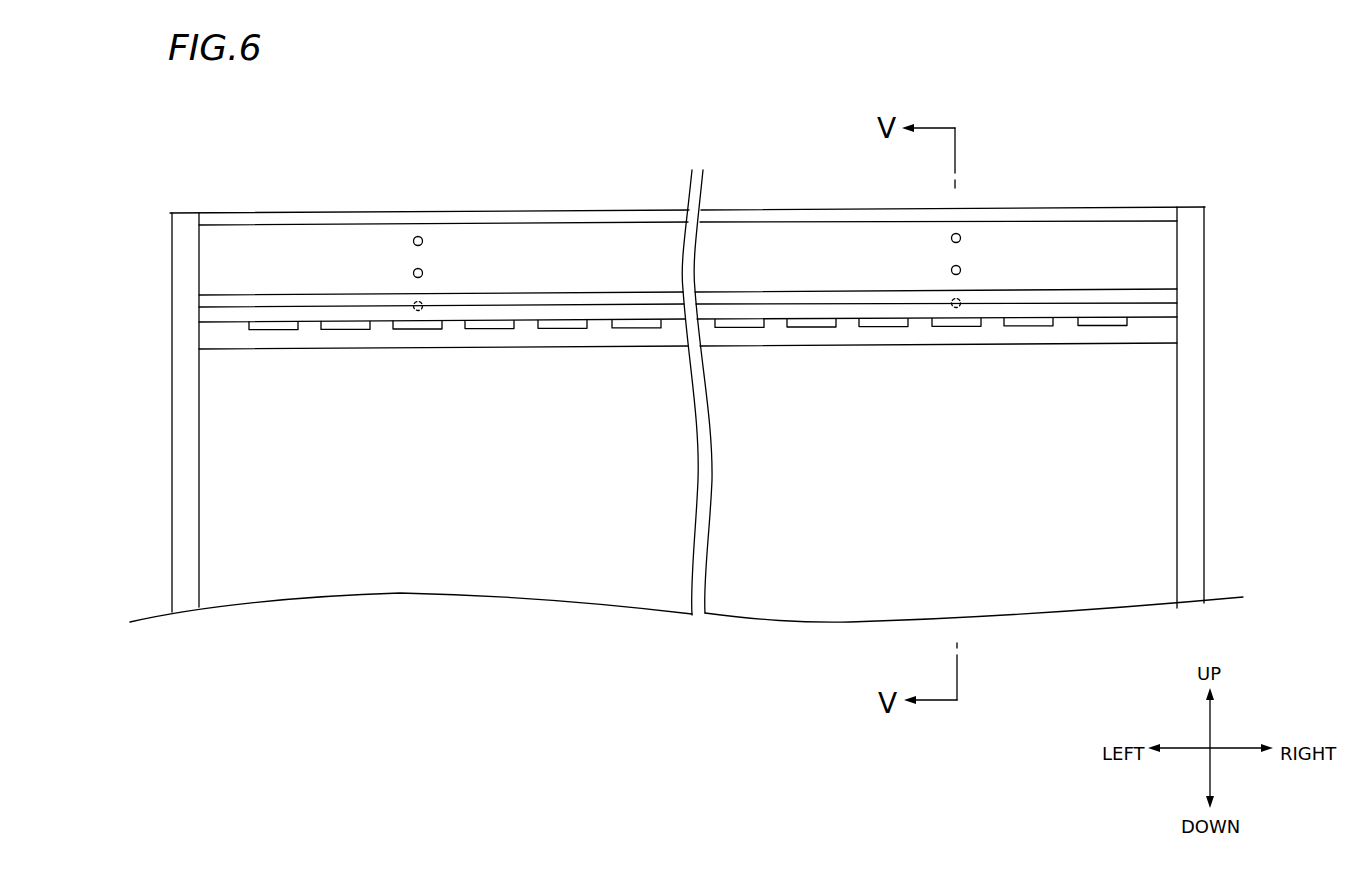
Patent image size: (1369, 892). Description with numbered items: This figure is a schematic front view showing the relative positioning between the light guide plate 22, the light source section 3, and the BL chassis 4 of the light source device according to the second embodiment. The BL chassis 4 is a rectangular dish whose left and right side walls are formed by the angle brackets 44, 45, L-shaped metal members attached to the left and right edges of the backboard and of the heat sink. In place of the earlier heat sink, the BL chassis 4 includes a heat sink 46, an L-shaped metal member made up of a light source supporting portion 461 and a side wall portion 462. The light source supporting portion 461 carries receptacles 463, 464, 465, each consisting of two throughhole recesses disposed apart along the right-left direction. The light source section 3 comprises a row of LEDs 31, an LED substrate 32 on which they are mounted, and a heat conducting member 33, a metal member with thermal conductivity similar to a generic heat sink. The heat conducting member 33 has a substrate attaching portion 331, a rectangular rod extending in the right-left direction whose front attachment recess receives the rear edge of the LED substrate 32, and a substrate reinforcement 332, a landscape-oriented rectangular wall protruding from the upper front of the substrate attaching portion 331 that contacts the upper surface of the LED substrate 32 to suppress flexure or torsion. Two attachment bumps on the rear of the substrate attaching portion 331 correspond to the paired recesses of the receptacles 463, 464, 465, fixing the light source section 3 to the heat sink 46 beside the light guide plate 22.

The BL chassis 4 is at (242, 194).
The angle bracket 44 is at (183, 510).
The angle bracket 45 is at (1190, 403).
The light guide plate 22 is at (1150, 515).
The heat sink 46 is at (688, 162).
The side wall portion 462 is at (750, 212).
The light source supporting portion 461 is at (798, 245).
The receptacle 463 is at (414, 238).
The receptacle 464 is at (422, 272).
The receptacle 465 is at (423, 305).
The light source section 3 is at (749, 209).
The LED 31 is at (970, 318).
The LED substrate 32 is at (1120, 308).
The heat conducting member 33 is at (1159, 206).
The substrate attaching portion 331 is at (1165, 332).
The substrate reinforcement 332 is at (1165, 297).